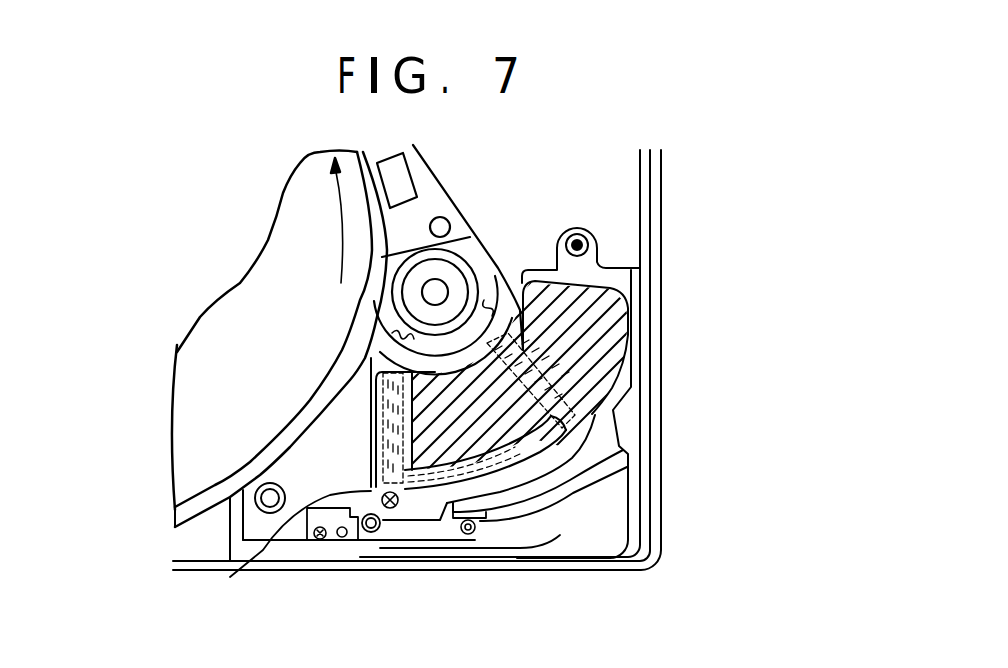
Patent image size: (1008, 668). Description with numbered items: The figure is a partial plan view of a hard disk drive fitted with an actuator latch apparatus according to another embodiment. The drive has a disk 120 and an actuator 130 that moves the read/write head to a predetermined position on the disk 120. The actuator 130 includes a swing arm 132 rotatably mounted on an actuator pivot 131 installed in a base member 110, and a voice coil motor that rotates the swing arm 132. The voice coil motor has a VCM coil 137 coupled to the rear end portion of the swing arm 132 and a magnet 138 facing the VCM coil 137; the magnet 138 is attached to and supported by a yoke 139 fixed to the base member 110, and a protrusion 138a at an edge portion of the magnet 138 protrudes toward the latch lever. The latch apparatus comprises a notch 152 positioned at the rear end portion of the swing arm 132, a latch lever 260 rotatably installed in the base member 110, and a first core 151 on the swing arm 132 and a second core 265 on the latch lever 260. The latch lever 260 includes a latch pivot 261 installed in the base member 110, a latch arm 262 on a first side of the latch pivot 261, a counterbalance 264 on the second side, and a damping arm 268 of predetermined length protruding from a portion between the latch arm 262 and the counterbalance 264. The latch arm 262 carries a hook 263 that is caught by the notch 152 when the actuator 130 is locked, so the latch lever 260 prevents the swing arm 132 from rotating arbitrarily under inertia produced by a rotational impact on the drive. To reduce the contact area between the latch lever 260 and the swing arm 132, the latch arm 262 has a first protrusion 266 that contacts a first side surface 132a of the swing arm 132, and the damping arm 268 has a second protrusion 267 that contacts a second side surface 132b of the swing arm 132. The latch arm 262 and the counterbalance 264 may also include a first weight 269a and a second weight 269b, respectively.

The base member 110 is at (207, 535).
The disk 120 is at (277, 240).
The actuator 130 is at (484, 221).
The actuator pivot 131 is at (437, 290).
The swing arm 132 is at (413, 170).
The first side surface 132a is at (397, 540).
The second side surface 132b is at (365, 487).
The VCM coil 137 is at (565, 455).
The magnet 138 is at (617, 318).
The protrusion 138a is at (385, 495).
The yoke 139 is at (620, 278).
The first core 151 is at (413, 478).
The notch 152 is at (425, 470).
The latch lever 260 is at (447, 552).
The latch pivot 261 is at (368, 533).
The latch arm 262 is at (472, 536).
The hook 263 is at (527, 530).
The counterbalance 264 is at (347, 538).
The second core 265 is at (332, 538).
The first protrusion 266 is at (413, 540).
The second protrusion 267 is at (230, 577).
The damping arm 268 is at (177, 470).
The first weight 269a is at (480, 533).
The second weight 269b is at (318, 538).